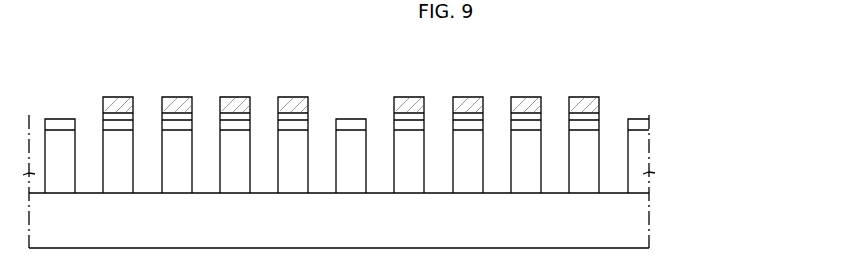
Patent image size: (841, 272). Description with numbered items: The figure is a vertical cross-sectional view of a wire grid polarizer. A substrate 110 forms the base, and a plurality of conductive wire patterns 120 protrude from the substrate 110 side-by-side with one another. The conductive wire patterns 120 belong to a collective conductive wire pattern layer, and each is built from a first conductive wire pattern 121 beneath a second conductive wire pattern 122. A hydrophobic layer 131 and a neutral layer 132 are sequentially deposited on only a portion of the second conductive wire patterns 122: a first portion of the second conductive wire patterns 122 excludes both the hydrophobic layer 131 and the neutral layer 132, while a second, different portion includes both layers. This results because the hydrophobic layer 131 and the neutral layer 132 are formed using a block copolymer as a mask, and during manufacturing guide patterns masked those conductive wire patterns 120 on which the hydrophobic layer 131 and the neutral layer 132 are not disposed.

The substrate 110 is at (649, 222).
The conductive wire patterns 120 is at (404, 155).
The first conductive wire patterns 121 is at (649, 164).
The second conductive wire patterns 122 is at (649, 127).
The hydrophobic layer 131 is at (599, 116).
The neutral layer 132 is at (583, 103).